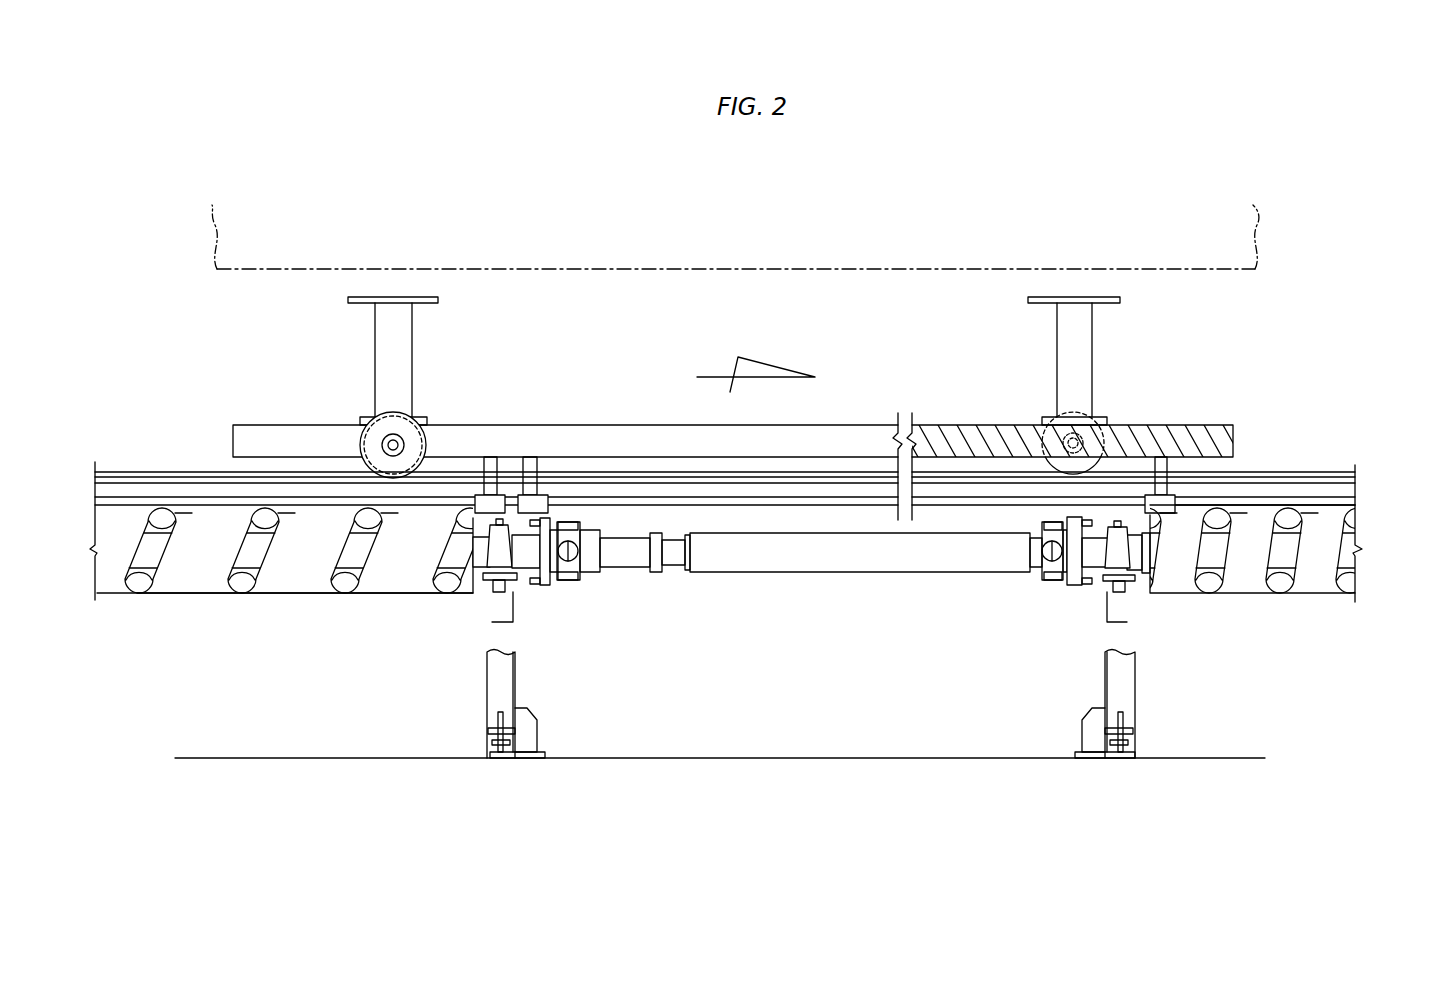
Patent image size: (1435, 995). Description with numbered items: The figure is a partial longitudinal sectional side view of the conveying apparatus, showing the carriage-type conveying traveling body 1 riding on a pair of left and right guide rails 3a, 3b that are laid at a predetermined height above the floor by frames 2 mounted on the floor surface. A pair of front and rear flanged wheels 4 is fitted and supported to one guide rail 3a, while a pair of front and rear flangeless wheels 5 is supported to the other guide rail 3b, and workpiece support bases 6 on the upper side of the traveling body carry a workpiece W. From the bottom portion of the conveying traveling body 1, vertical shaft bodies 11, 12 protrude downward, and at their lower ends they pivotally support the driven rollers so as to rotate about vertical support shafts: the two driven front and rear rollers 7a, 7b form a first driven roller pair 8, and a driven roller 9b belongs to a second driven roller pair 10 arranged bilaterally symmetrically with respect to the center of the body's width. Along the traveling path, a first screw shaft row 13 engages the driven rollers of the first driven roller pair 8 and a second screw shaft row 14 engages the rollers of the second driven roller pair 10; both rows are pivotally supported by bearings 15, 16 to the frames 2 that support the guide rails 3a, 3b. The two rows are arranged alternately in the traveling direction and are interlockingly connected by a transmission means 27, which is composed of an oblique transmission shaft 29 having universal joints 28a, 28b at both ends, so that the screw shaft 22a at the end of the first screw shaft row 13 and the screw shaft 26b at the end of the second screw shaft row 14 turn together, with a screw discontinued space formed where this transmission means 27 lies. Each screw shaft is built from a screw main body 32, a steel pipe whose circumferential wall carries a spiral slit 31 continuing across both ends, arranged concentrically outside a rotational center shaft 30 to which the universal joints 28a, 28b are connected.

The carriage-type conveying traveling body 1 is at (960, 413).
The frame 2 is at (530, 677).
The guide rail 3a is at (162, 477).
The guide rail 3b is at (1302, 478).
The flanged wheel 4 is at (393, 422).
The flangeless wheel 5 is at (1060, 471).
The workpiece support base 6 is at (392, 297).
The driven roller 7a is at (1160, 508).
The driven roller 7b is at (548, 503).
The first driven roller pair 8 is at (1164, 560).
The driven roller 9b is at (500, 503).
The second driven roller pair 10 is at (480, 528).
The vertical shaft body 11 is at (537, 468).
The vertical shaft body 12 is at (488, 467).
The first screw shaft row 13 is at (1268, 610).
The second screw shaft row 14 is at (284, 615).
The bearing 15 is at (1140, 590).
The bearing 16 is at (516, 582).
The screw shaft 22a is at (1262, 503).
The screw shaft 26b is at (290, 608).
The transmission means 27 is at (856, 588).
The universal joint 28a is at (1045, 588).
The universal joint 28b is at (572, 583).
The oblique transmission shaft 29 is at (780, 572).
The rotational center shaft 30 is at (140, 575).
The spiral slit 31 is at (330, 593).
The screw main body 32 is at (185, 595).
The workpiece W is at (722, 241).